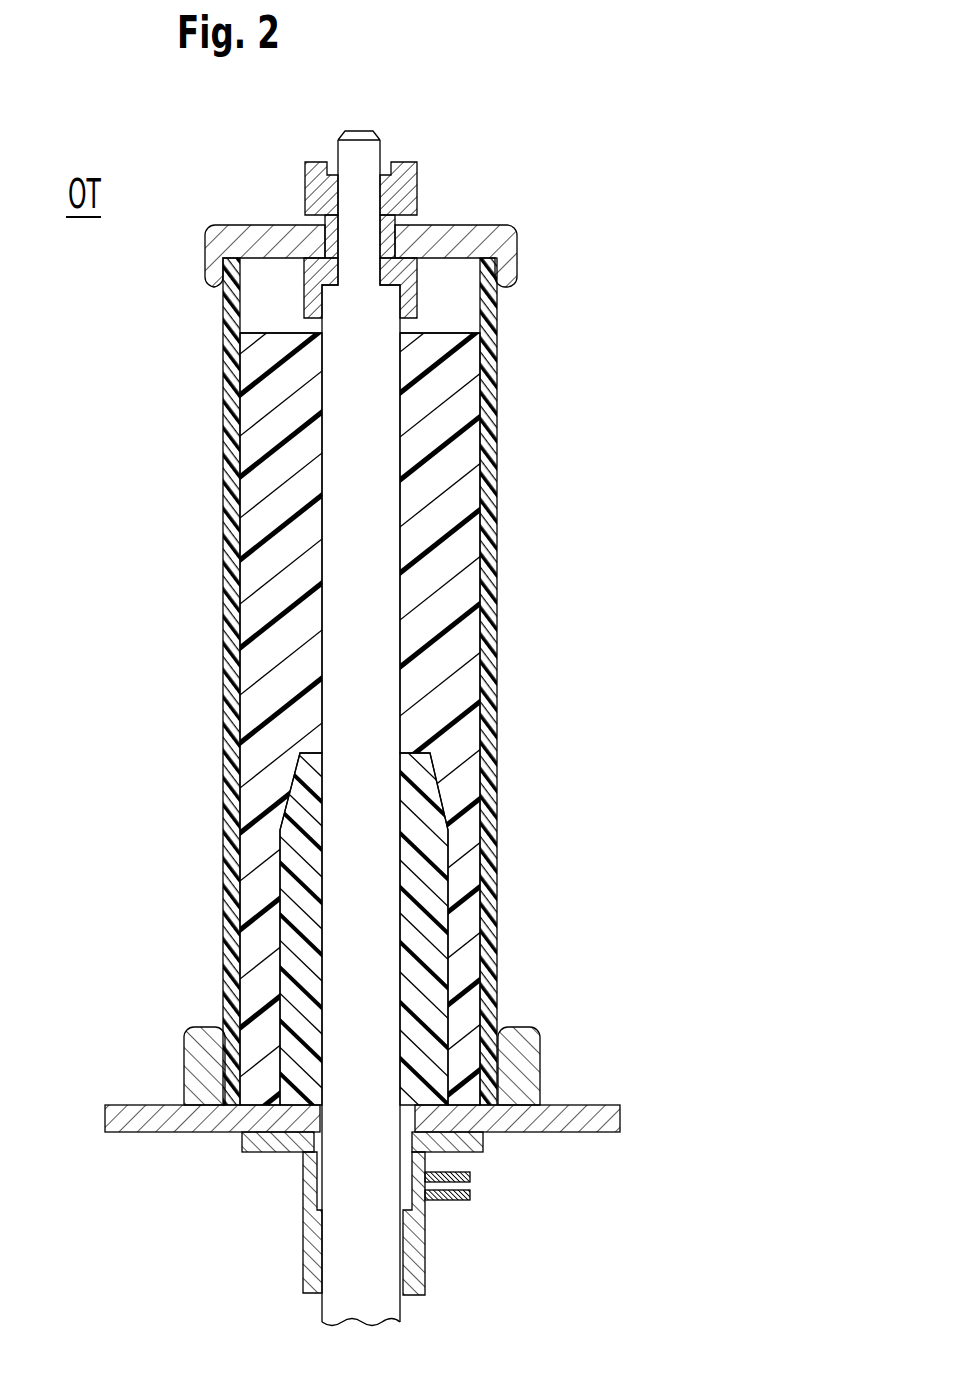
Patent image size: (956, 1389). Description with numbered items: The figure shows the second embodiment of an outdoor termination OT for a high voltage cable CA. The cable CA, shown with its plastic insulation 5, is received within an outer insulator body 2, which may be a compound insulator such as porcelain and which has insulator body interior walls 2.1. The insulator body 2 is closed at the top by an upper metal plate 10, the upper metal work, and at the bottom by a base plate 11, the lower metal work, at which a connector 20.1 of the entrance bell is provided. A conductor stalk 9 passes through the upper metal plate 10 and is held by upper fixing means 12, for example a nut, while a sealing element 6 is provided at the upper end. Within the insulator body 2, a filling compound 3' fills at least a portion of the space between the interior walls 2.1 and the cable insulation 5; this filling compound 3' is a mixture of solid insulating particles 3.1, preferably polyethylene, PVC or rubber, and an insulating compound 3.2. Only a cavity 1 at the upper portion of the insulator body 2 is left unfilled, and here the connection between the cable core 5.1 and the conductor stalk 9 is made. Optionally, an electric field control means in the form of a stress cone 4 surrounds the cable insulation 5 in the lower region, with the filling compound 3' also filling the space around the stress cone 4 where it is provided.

The cavity 1 is at (270, 308).
The insulator body 2 is at (225, 468).
The insulator body interior walls 2.1 is at (235, 727).
The filling compound 3' is at (410, 719).
The solid particles 3.1 is at (262, 568).
The insulating compound 3.2 is at (440, 568).
The stress cone 4 is at (423, 890).
The plastic insulation 5 is at (380, 706).
The cable core 5.1 is at (359, 272).
The sealing element 6 is at (413, 302).
The conductor stalk 9 is at (364, 160).
The upper metal plate 10 is at (447, 243).
The base plate 11 is at (612, 1132).
The upper fixing means 12 is at (313, 186).
The connector 20.1 is at (450, 1202).
The high voltage cable CA is at (320, 1312).